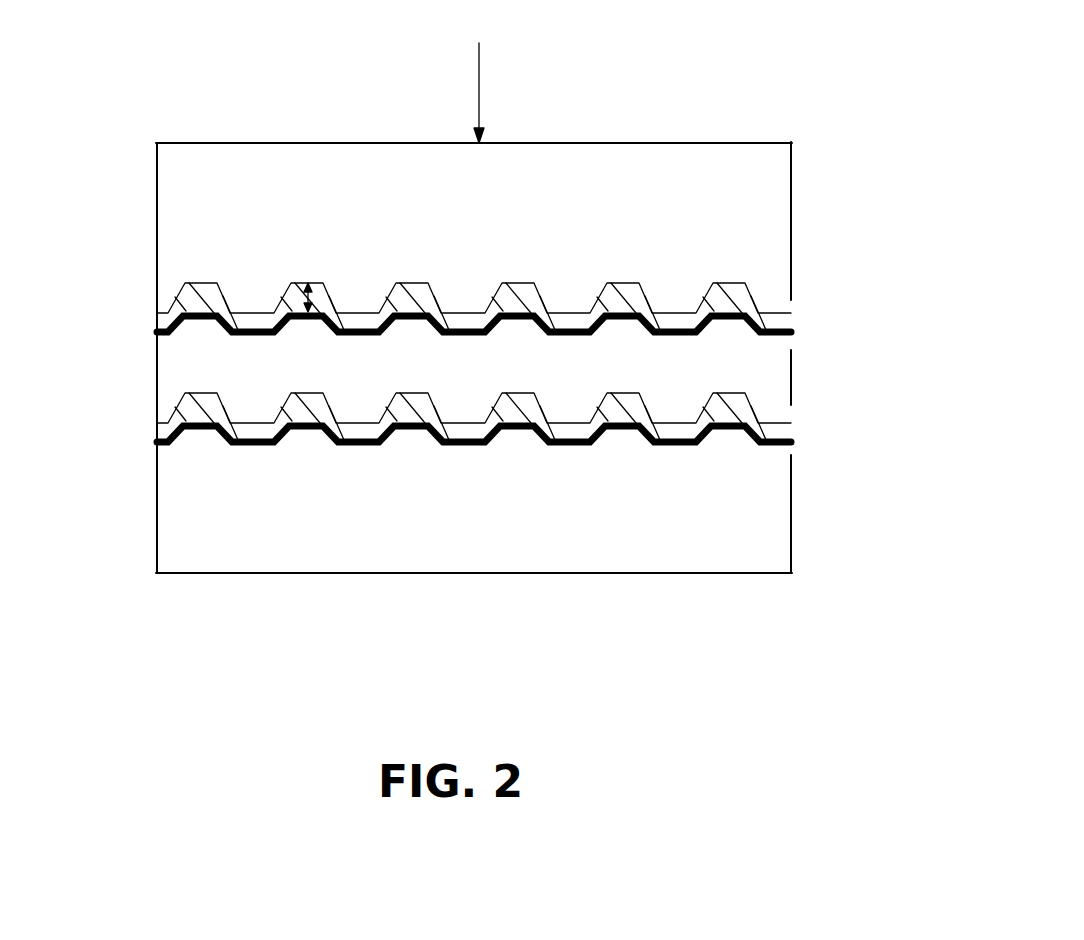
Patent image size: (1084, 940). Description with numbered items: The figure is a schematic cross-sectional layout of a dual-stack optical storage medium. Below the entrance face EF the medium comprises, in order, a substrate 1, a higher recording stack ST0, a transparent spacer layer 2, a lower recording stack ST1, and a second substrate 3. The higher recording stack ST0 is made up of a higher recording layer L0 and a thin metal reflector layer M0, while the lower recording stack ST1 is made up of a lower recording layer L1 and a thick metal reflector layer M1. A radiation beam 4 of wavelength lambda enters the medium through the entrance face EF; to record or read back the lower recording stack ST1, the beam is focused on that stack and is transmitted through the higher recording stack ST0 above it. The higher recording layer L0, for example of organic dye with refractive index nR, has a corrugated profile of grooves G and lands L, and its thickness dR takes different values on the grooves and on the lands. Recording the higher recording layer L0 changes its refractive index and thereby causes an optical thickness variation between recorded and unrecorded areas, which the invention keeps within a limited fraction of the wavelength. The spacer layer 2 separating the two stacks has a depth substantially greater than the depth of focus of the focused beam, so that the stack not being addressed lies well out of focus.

The substrate 1 is at (780, 236).
The spacer layer 2 is at (772, 386).
The second substrate 3 is at (783, 523).
The radiation beam 4 is at (476, 100).
The entrance face EF is at (760, 143).
The higher recording stack ST0 is at (488, 297).
The lower recording stack ST1 is at (506, 470).
The higher recording layer L0 is at (422, 266).
The thin metal reflector layer M0 is at (195, 319).
The lower recording layer L1 is at (197, 407).
The thick metal reflector layer M1 is at (195, 431).
The groove G is at (300, 284).
The thickness of the higher recording layer dR is at (312, 302).
The land L is at (472, 312).